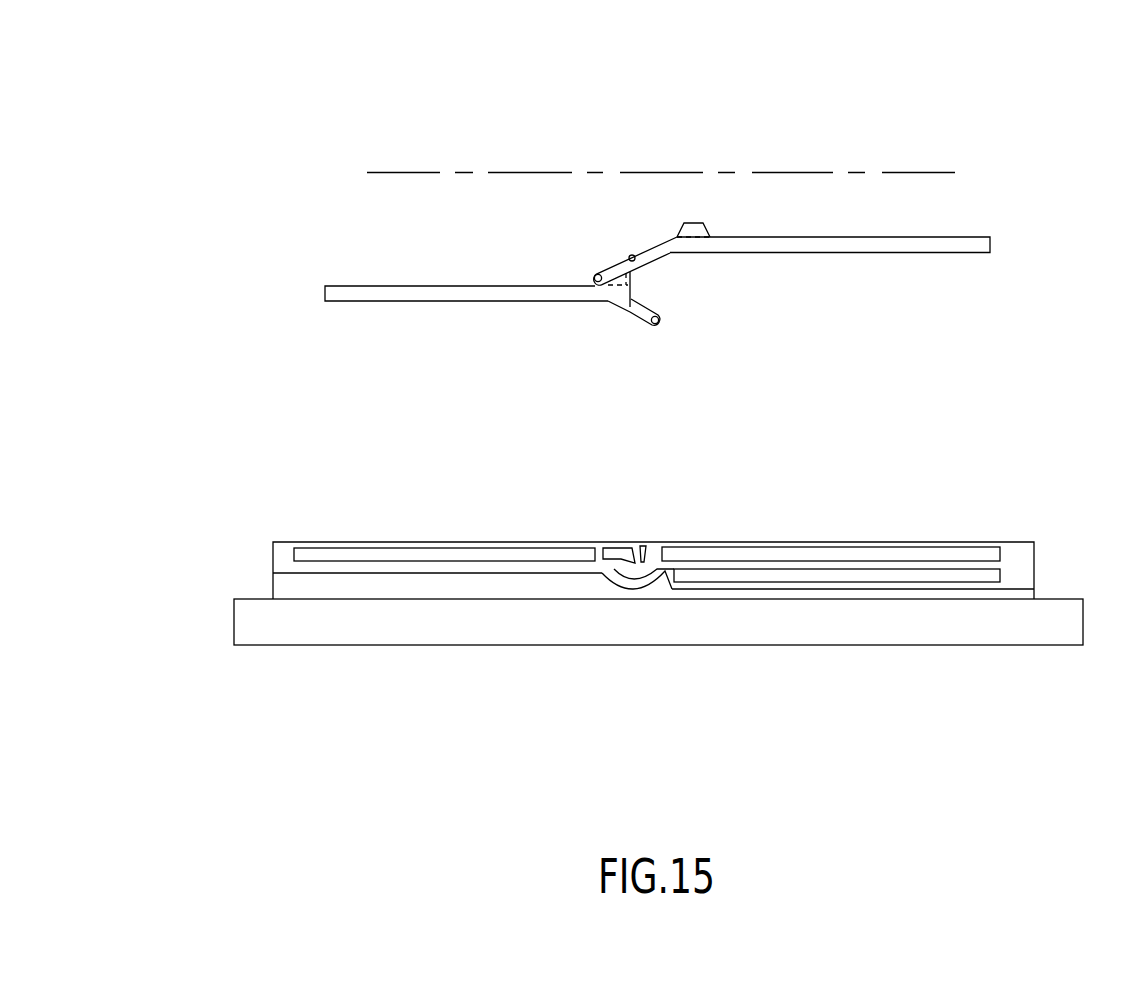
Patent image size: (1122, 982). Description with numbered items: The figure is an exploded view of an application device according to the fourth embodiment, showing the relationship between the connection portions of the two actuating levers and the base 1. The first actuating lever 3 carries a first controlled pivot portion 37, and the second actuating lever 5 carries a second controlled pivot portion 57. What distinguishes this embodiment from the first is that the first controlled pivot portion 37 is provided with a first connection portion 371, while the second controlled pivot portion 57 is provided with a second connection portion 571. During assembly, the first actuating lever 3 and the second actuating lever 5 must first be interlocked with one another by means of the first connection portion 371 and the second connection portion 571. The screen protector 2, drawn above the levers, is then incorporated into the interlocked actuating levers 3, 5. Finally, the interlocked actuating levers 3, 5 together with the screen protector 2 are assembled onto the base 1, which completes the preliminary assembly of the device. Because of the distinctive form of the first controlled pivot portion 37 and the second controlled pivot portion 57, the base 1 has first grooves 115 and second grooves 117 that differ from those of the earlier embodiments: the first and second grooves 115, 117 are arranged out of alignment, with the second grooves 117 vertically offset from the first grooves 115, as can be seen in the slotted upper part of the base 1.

The base 1 is at (273, 542).
The screen protector 2 is at (402, 172).
The first actuating lever 3 is at (990, 237).
The second actuating lever 5 is at (325, 285).
The first controlled pivot portion 37 is at (657, 262).
The first connection portion 371 is at (629, 257).
The second controlled pivot portion 57 is at (640, 318).
The second connection portion 571 is at (631, 311).
The first grooves 115 is at (878, 547).
The second grooves 117 is at (370, 548).